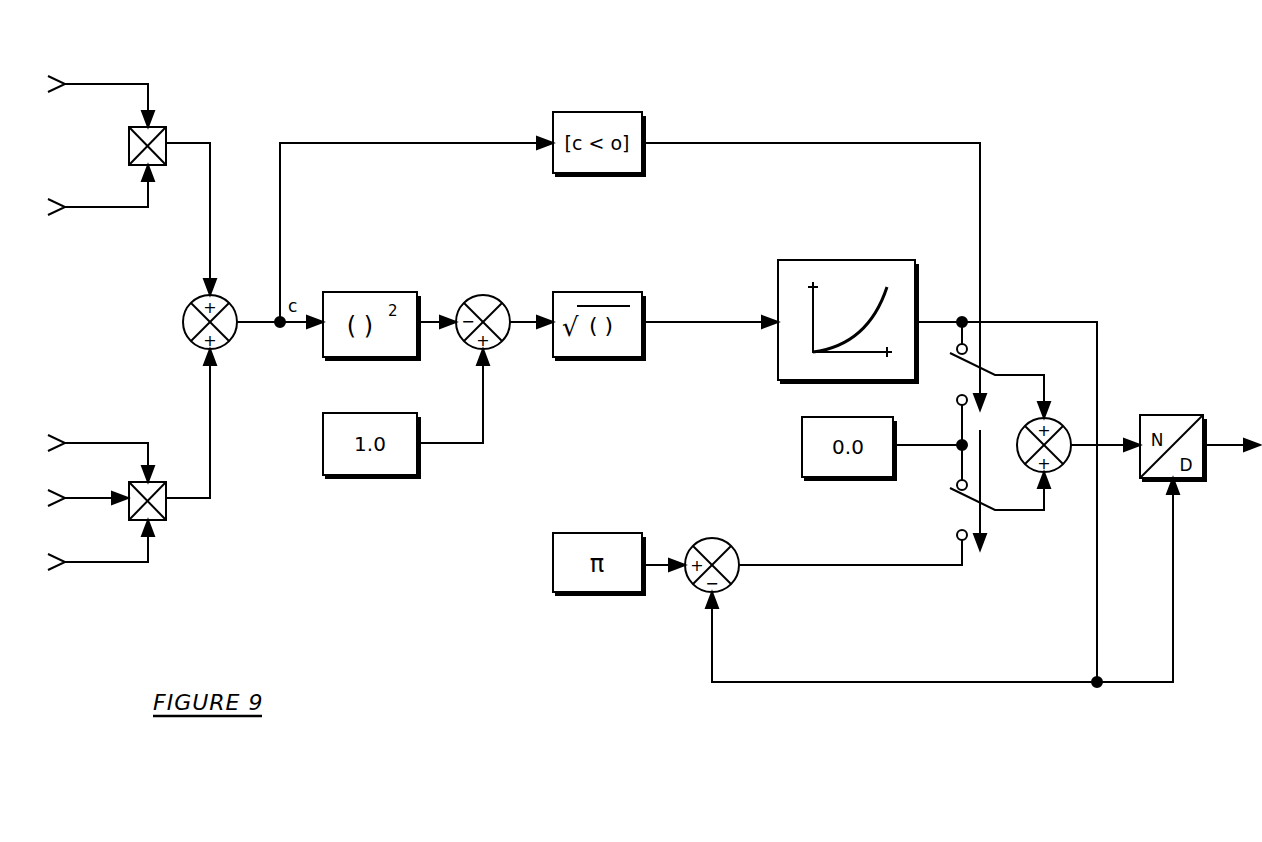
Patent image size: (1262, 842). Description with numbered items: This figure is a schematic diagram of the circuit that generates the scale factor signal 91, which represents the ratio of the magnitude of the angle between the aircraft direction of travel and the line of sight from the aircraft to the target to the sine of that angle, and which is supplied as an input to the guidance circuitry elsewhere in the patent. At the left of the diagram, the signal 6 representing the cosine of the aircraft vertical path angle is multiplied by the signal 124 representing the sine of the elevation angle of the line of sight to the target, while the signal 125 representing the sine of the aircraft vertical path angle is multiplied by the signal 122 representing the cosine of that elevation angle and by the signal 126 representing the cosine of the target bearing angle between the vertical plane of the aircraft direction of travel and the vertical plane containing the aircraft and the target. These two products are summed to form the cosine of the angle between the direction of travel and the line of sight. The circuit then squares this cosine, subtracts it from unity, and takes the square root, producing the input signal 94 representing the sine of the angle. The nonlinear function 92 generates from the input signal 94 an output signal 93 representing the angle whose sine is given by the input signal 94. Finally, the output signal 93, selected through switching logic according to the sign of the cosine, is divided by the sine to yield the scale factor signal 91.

The signal representing the sine of elevation angle 124 is at (101, 82).
The signal representing the sine of the aircraft vertical path angle 125 is at (101, 189).
The signal representing the cosine of the aircraft vertical path angle 6 is at (101, 440).
The signal representing the cosine of elevation angle 122 is at (88, 479).
The signal representing the cosine of target bearing angle 126 is at (101, 543).
The input signal 94 is at (710, 303).
The nonlinear function 92 is at (848, 258).
The output signal 93 is at (1008, 484).
The signal representing the scale factor 91 is at (1231, 427).